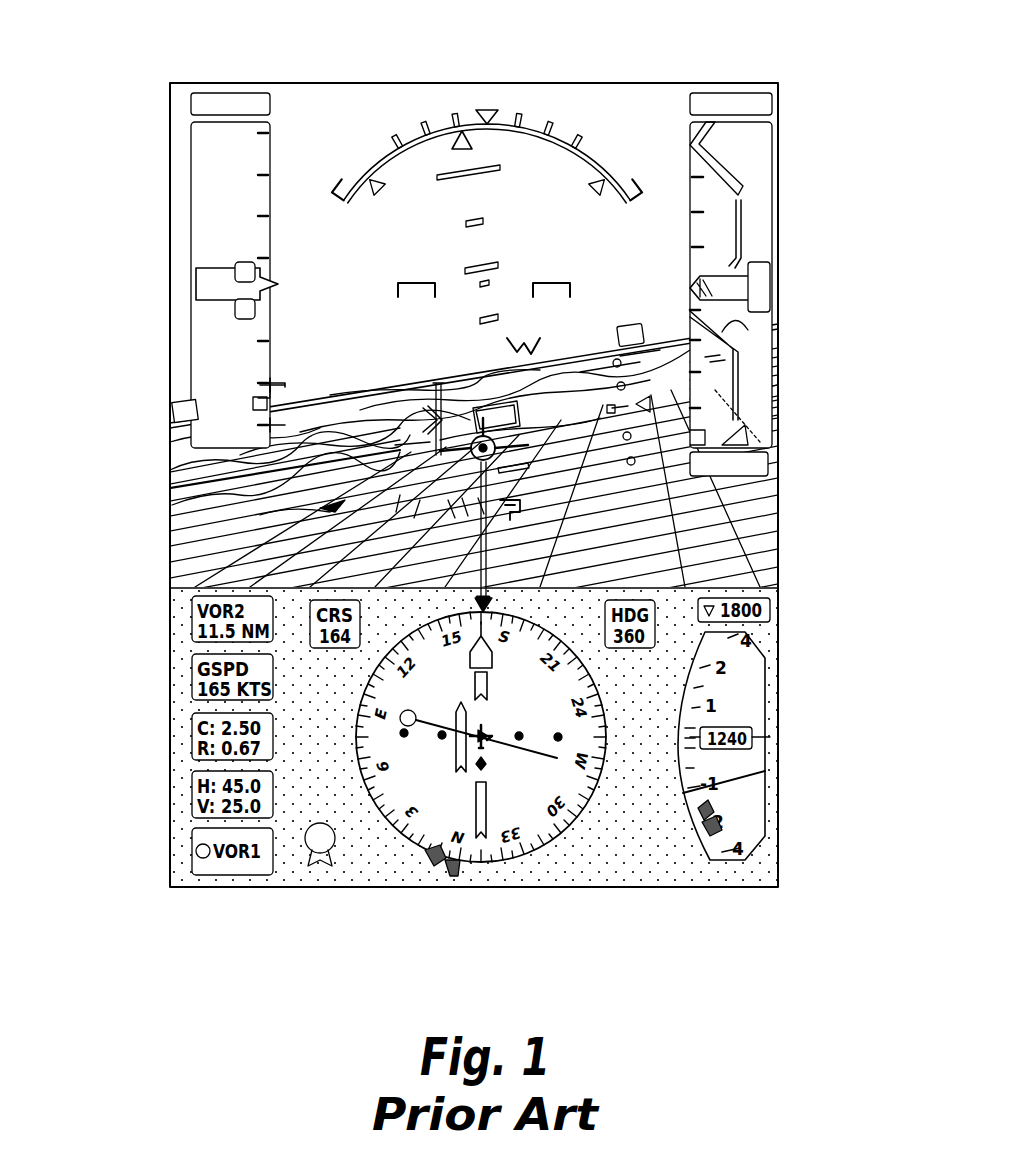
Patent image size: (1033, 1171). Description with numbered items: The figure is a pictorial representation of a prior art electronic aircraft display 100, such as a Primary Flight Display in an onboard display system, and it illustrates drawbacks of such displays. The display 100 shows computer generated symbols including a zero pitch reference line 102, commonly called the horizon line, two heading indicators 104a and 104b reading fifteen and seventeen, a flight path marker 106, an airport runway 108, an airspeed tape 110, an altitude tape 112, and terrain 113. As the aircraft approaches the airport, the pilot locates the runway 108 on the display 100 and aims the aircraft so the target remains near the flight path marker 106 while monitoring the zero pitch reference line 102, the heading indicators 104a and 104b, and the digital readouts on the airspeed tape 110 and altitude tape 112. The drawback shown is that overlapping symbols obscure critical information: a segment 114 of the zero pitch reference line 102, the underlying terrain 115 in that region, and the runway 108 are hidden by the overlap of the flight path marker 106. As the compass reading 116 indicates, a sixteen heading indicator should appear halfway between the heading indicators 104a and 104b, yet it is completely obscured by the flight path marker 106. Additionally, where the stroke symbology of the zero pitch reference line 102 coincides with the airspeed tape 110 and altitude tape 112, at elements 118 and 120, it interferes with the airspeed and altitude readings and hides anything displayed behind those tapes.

The display 100 is at (558, 77).
The zero pitch reference line 102 is at (372, 405).
The heading indicator 104a is at (180, 400).
The heading indicator 104b is at (628, 325).
The flight path marker 106 is at (470, 470).
The airport runway 108 is at (598, 402).
The airspeed tape 110 is at (198, 220).
The altitude tape 112 is at (762, 213).
The terrain 113 is at (170, 535).
The segment 114 is at (487, 232).
The underlying terrain 115 is at (423, 397).
The compass reading 116 is at (478, 600).
The element where stroke symbology coincides with airspeed tape 118 is at (265, 420).
The element where stroke symbology coincides with altitude tape 120 is at (745, 336).